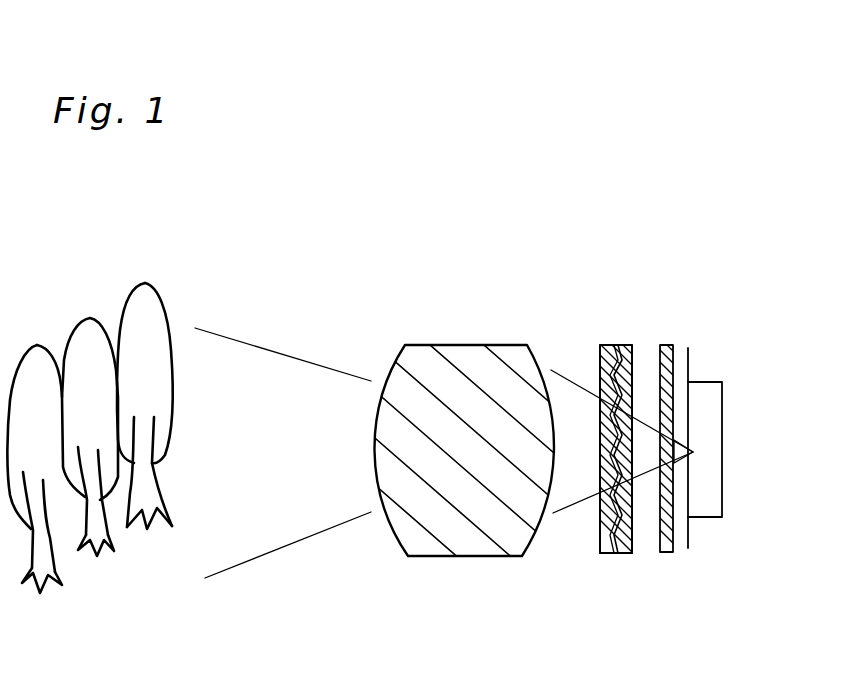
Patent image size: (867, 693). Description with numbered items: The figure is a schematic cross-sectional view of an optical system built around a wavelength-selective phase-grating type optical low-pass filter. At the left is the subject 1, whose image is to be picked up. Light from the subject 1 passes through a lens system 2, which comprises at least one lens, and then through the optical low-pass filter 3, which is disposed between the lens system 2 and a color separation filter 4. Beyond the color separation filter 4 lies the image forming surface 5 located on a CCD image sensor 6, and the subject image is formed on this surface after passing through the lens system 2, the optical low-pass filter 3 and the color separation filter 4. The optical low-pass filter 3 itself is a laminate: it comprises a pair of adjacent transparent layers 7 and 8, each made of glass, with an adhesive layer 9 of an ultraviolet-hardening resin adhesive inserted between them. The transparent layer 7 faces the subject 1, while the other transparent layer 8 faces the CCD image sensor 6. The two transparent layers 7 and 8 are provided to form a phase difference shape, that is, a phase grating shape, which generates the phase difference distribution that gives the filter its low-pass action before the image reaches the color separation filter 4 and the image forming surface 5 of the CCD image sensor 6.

The subject 1 is at (98, 556).
The lens system 2 is at (443, 550).
The wavelength-selective phase-grating type optical low-pass filter 3 is at (603, 543).
The color separation filter 4 is at (667, 553).
The image forming surface 5 is at (690, 548).
The CCD image sensor 6 is at (710, 507).
The transparent layer 7 is at (600, 365).
The transparent layer 8 is at (632, 368).
The adhesive layer 9 is at (608, 352).